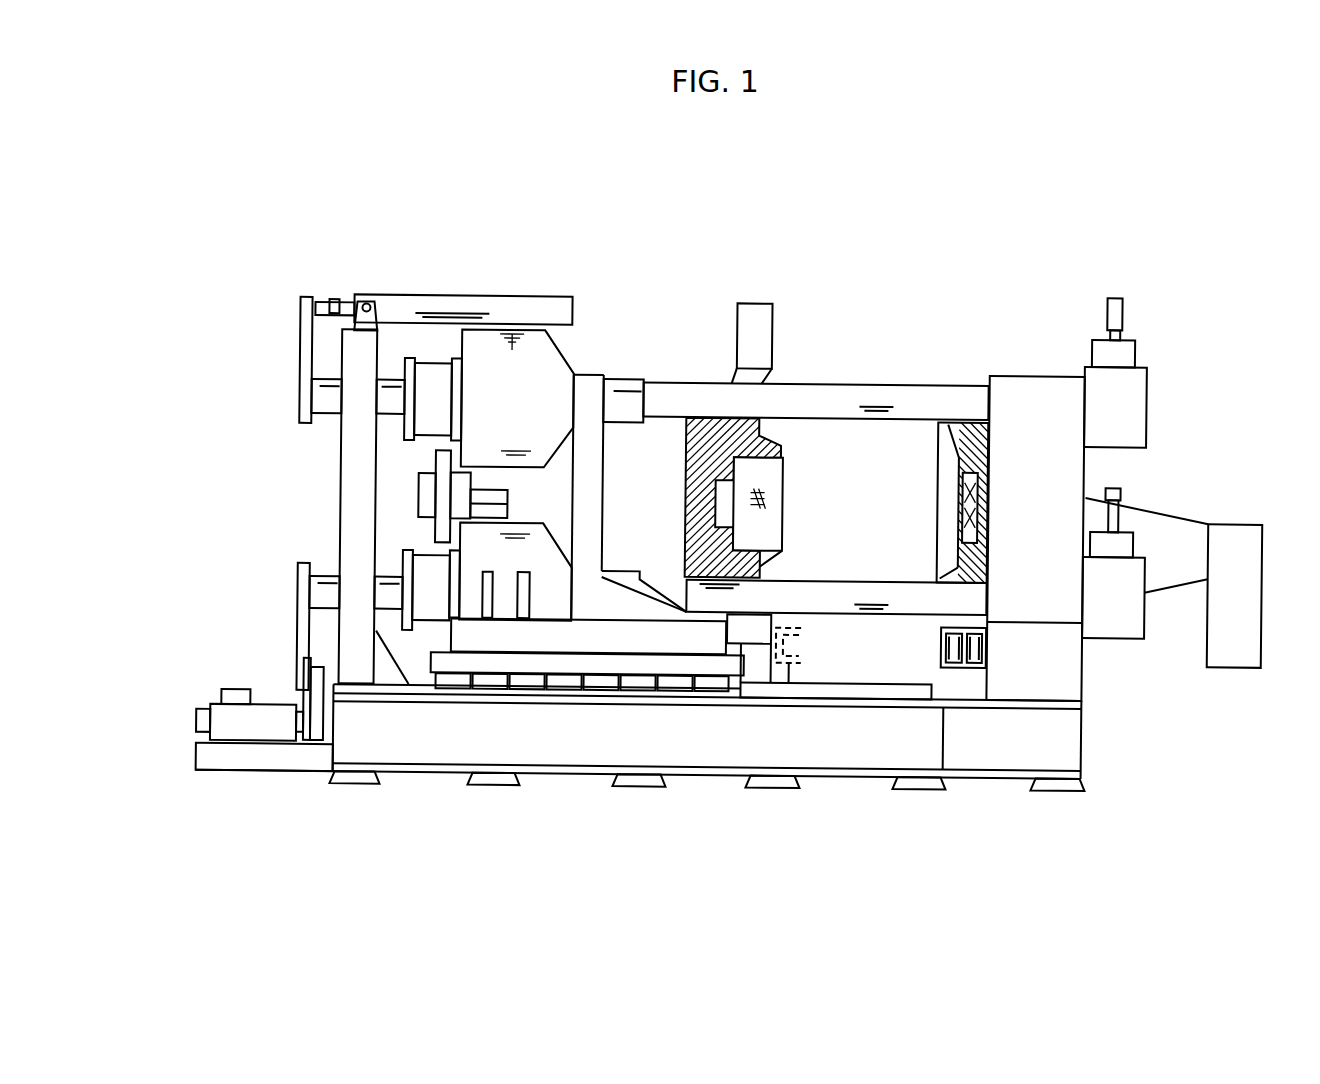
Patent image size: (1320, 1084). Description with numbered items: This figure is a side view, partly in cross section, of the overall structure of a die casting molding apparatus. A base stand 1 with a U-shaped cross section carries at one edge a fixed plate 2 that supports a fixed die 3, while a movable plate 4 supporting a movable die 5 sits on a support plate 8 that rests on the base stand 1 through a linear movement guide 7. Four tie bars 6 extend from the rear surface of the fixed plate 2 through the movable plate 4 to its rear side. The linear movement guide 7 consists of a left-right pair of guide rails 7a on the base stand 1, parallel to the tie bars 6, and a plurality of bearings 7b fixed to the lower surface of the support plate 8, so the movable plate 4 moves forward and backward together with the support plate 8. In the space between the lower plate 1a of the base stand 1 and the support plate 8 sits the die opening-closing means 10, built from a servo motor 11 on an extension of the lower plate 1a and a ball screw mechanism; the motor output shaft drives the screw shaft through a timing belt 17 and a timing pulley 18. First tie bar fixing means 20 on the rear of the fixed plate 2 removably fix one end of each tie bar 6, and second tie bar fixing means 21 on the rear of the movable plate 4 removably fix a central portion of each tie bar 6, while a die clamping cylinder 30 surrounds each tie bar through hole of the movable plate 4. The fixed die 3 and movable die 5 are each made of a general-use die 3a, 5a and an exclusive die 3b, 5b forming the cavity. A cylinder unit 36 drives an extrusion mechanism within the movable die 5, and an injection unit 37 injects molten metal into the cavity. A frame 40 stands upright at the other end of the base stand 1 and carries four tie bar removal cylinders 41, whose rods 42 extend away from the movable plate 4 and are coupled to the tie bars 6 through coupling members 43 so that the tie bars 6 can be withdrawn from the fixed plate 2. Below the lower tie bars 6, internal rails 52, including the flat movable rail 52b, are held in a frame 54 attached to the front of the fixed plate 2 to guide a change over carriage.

The base stand 1 is at (1091, 751).
The lower plate 1a is at (220, 765).
The fixed plate 2 is at (1039, 362).
The fixed die 3 is at (945, 415).
The general-use die 3a is at (968, 437).
The exclusive die 3b is at (962, 533).
The movable plate 4 is at (586, 362).
The movable die 5 is at (765, 428).
The general-use die 5a is at (703, 422).
The exclusive die 5b is at (772, 486).
The tie bars 6 is at (858, 398).
The linear movement guide 7 is at (632, 782).
The guide rails 7a is at (745, 692).
The bearings 7b is at (635, 692).
The support plate 8 is at (533, 664).
The die opening-closing means 10 is at (273, 733).
The motor 11 is at (220, 727).
The belt 17 is at (312, 706).
The pulley 18 is at (302, 746).
The first tie bar fixing means 20 is at (1148, 357).
The second tie bar fixing means 21 is at (437, 358).
The die clamping cylinder 30 is at (513, 333).
The cylinder unit 36 is at (420, 502).
The injection unit 37 is at (1201, 507).
The frame 40 is at (347, 521).
The tie bar removal cylinders 41 is at (473, 306).
The rod 42 is at (330, 304).
The coupling member 43 is at (305, 356).
The internal rails 52 is at (965, 625).
The movable rail 52b is at (792, 692).
The frame 54 is at (957, 665).